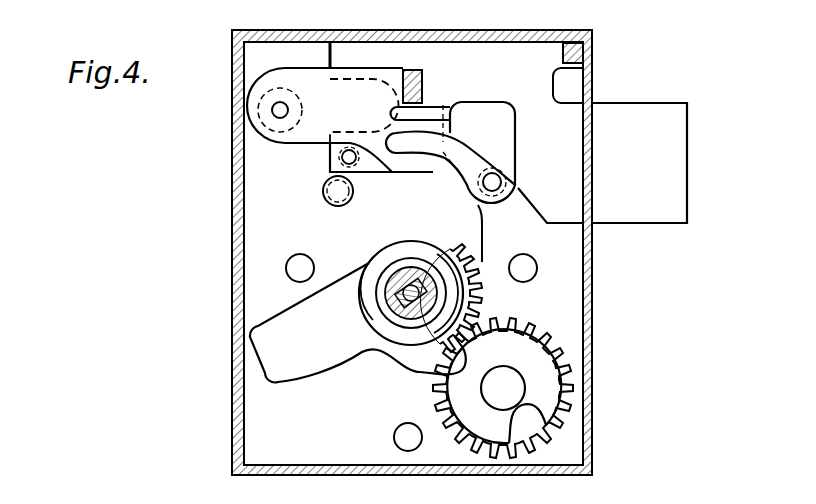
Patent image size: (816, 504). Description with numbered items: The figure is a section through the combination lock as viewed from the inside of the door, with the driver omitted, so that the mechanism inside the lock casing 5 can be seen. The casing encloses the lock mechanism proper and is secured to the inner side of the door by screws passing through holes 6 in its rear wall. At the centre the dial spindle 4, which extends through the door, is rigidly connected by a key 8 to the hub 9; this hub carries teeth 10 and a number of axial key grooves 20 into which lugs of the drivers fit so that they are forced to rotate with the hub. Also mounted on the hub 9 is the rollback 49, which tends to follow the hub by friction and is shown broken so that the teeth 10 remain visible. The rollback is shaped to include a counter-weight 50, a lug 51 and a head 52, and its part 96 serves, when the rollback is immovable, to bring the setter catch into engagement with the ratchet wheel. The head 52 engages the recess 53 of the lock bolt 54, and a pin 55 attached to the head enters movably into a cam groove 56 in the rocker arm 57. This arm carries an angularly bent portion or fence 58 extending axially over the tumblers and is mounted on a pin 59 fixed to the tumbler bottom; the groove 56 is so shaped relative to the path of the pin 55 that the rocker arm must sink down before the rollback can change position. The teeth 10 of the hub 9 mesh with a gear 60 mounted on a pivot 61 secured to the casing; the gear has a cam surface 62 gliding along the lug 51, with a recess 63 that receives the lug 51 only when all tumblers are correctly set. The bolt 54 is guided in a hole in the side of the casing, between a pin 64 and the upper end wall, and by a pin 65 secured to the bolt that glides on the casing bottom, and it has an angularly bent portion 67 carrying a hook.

The spindle 4 is at (407, 330).
The lock casing 5 is at (232, 118).
The holes 6 is at (286, 268).
The key 8 is at (485, 183).
The hub 9 is at (393, 330).
The teeth 10 is at (482, 302).
The key grooves 20 is at (392, 287).
The rollback 49 is at (482, 238).
The counter-weight 50 is at (273, 352).
The lug 51 is at (424, 376).
The head 52 is at (503, 140).
The recess 53 is at (483, 110).
The lock bolt 54 is at (664, 130).
The pin 55 is at (484, 181).
The cam groove 56 is at (444, 105).
The rocker arm 57 is at (295, 70).
The fence 58 is at (411, 72).
The pin 59 is at (278, 112).
The gear 60 is at (534, 333).
The pivot 61 is at (504, 386).
The cam surface 62 is at (560, 388).
The recess 63 is at (523, 413).
The pin 64 is at (323, 191).
The pin 65 is at (342, 157).
The angularly bent portion 67 is at (575, 32).
The part of the rollback 96 is at (363, 318).